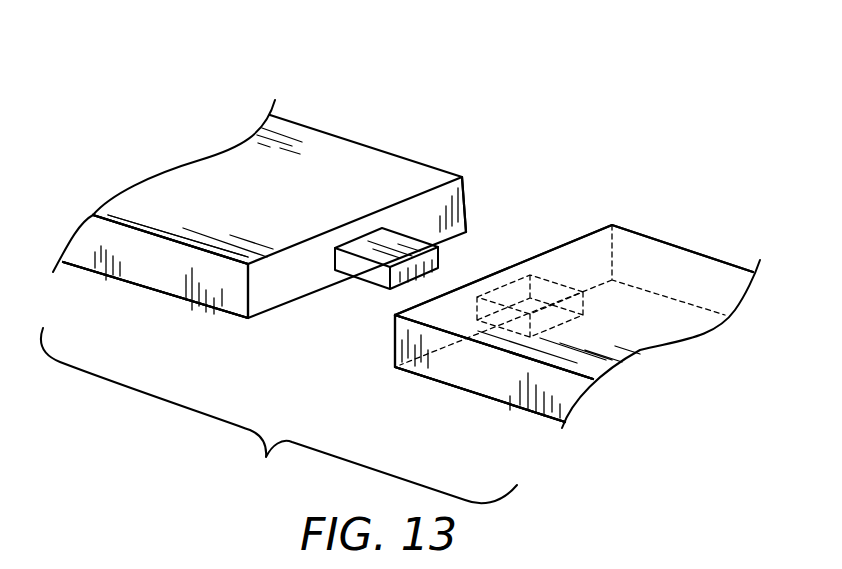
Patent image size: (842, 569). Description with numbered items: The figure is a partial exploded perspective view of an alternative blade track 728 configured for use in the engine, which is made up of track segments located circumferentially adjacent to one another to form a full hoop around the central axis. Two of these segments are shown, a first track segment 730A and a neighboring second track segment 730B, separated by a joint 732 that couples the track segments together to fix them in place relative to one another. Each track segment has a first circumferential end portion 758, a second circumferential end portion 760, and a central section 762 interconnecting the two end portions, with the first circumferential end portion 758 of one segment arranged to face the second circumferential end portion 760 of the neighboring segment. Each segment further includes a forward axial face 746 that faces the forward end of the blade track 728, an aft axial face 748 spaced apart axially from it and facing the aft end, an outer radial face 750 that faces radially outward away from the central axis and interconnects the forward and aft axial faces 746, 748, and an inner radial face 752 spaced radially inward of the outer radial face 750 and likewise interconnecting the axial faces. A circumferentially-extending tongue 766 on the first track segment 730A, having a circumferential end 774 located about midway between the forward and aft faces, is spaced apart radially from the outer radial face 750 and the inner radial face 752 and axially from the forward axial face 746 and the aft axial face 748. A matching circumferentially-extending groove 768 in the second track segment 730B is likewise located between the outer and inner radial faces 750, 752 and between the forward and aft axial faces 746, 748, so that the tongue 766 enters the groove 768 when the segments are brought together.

The blade track 728 is at (690, 70).
The first track segment 730A is at (338, 163).
The second track segment 730B is at (678, 268).
The joint 732 is at (520, 150).
The forward axial face 746 is at (122, 257).
The aft axial face 748 is at (378, 177).
The outer radial face 750 is at (163, 215).
The inner radial face 752 is at (178, 270).
The first circumferential end portion 758 is at (647, 253).
The second circumferential end portion 760 is at (435, 180).
The central section 762 is at (230, 195).
The circumferentially-extending tongue 766 is at (355, 293).
The circumferentially-extending groove 768 is at (517, 270).
The circumferential end 774 is at (438, 258).